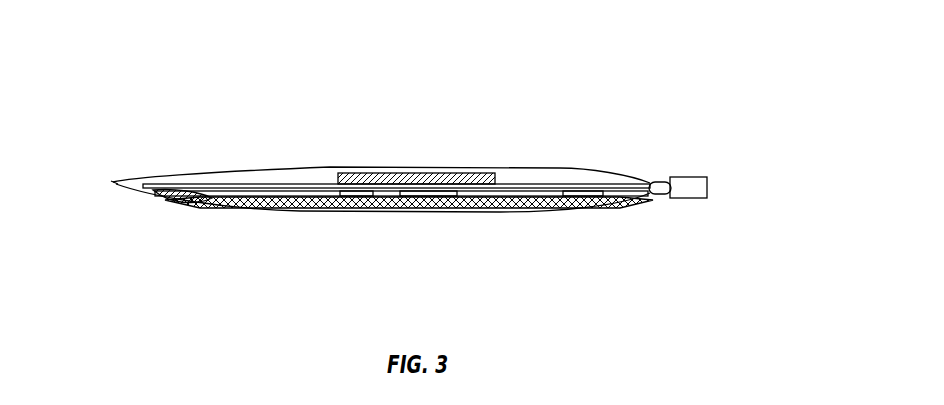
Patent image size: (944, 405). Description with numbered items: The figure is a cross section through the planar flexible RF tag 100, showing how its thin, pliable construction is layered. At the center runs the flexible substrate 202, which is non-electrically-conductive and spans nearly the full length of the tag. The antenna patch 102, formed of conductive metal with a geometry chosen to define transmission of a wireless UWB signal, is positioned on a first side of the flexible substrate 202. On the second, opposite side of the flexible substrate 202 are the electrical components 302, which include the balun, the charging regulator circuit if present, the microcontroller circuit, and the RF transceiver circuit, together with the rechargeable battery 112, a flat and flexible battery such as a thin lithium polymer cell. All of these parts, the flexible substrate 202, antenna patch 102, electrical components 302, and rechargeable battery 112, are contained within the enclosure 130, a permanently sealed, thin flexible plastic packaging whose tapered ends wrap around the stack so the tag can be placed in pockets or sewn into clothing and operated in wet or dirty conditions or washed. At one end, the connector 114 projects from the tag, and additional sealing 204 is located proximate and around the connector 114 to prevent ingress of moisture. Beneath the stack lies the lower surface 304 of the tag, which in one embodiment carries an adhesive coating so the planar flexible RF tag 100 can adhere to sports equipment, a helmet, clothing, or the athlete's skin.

The planar flexible RF tag 100 is at (765, 92).
The antenna patch 102 is at (333, 172).
The rechargeable battery 112 is at (185, 201).
The connector 114 is at (697, 182).
The enclosure 130 is at (113, 182).
The flexible substrate 202 is at (610, 183).
The additional sealing 204 is at (662, 193).
The electrical components 302 is at (558, 206).
The lower surface 304 is at (296, 212).